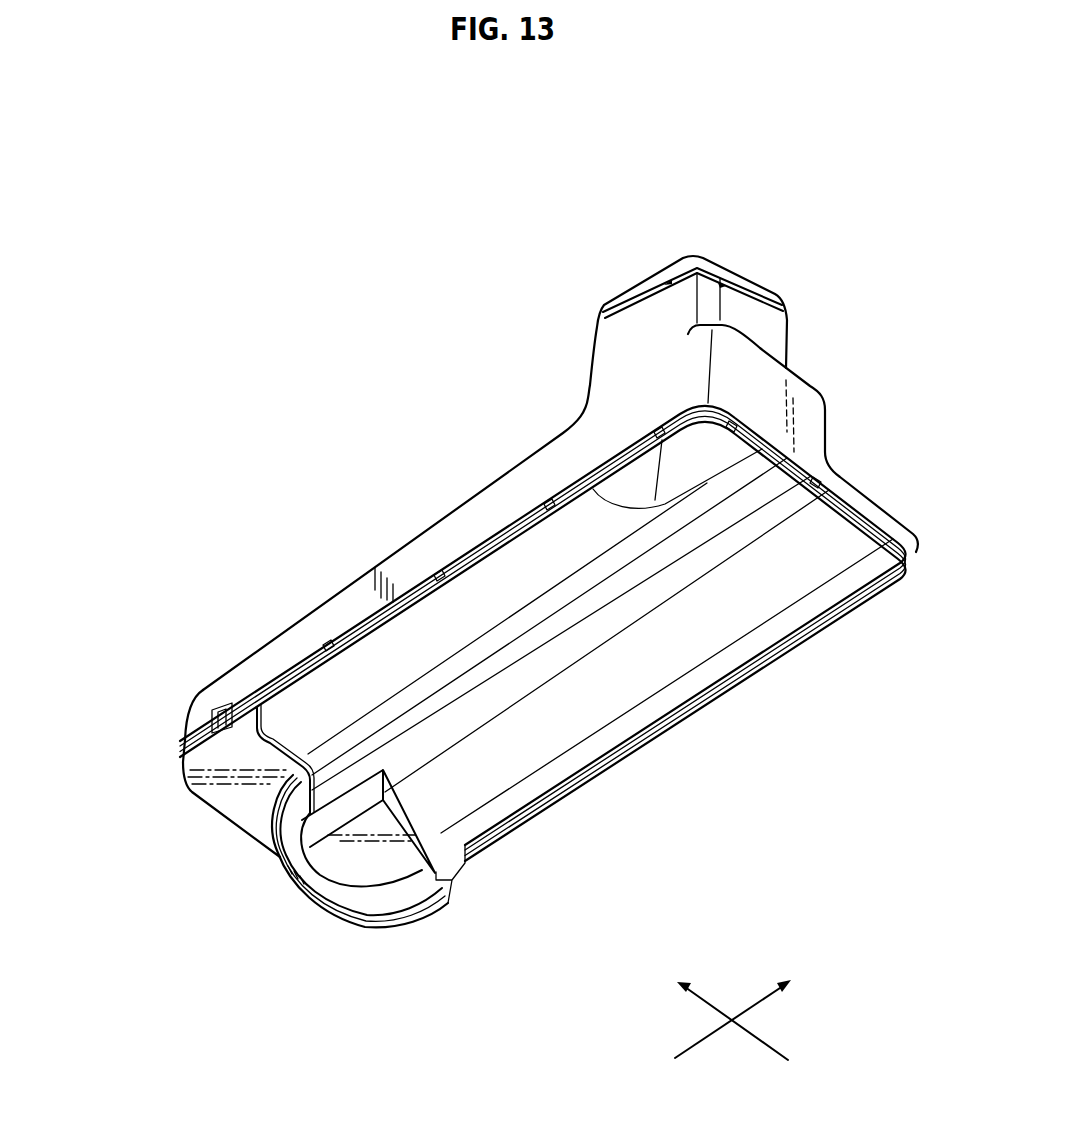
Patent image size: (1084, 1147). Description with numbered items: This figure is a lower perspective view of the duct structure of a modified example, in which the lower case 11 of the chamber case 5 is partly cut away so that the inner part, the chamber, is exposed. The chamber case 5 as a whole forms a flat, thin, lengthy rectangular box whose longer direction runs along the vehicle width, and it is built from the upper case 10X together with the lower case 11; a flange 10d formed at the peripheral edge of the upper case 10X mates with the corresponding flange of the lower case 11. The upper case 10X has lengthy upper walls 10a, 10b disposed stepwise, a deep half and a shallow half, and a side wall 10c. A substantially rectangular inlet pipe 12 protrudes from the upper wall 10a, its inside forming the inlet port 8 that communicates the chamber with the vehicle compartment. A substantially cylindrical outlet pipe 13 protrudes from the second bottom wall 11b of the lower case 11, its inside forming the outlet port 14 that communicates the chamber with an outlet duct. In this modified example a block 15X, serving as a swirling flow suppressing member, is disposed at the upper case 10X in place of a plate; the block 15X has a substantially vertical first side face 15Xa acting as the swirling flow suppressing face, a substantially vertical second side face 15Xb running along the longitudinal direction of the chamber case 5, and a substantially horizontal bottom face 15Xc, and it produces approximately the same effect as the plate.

The chamber case 5 is at (336, 432).
The inlet port 8 is at (645, 262).
The inlet pipe 12 is at (585, 357).
The upper case 10X is at (342, 583).
The upper wall 10a is at (487, 583).
The upper wall 10b is at (630, 682).
The side wall 10c is at (487, 820).
The flange 10d is at (760, 670).
The lower case 11 is at (209, 815).
The second bottom wall 11b is at (212, 814).
The outlet pipe 13 is at (278, 878).
The outlet port 14 is at (358, 936).
The block 15X is at (426, 829).
The first side face 15Xa is at (423, 857).
The second side face 15Xb is at (325, 823).
The bottom face 15Xc is at (385, 872).